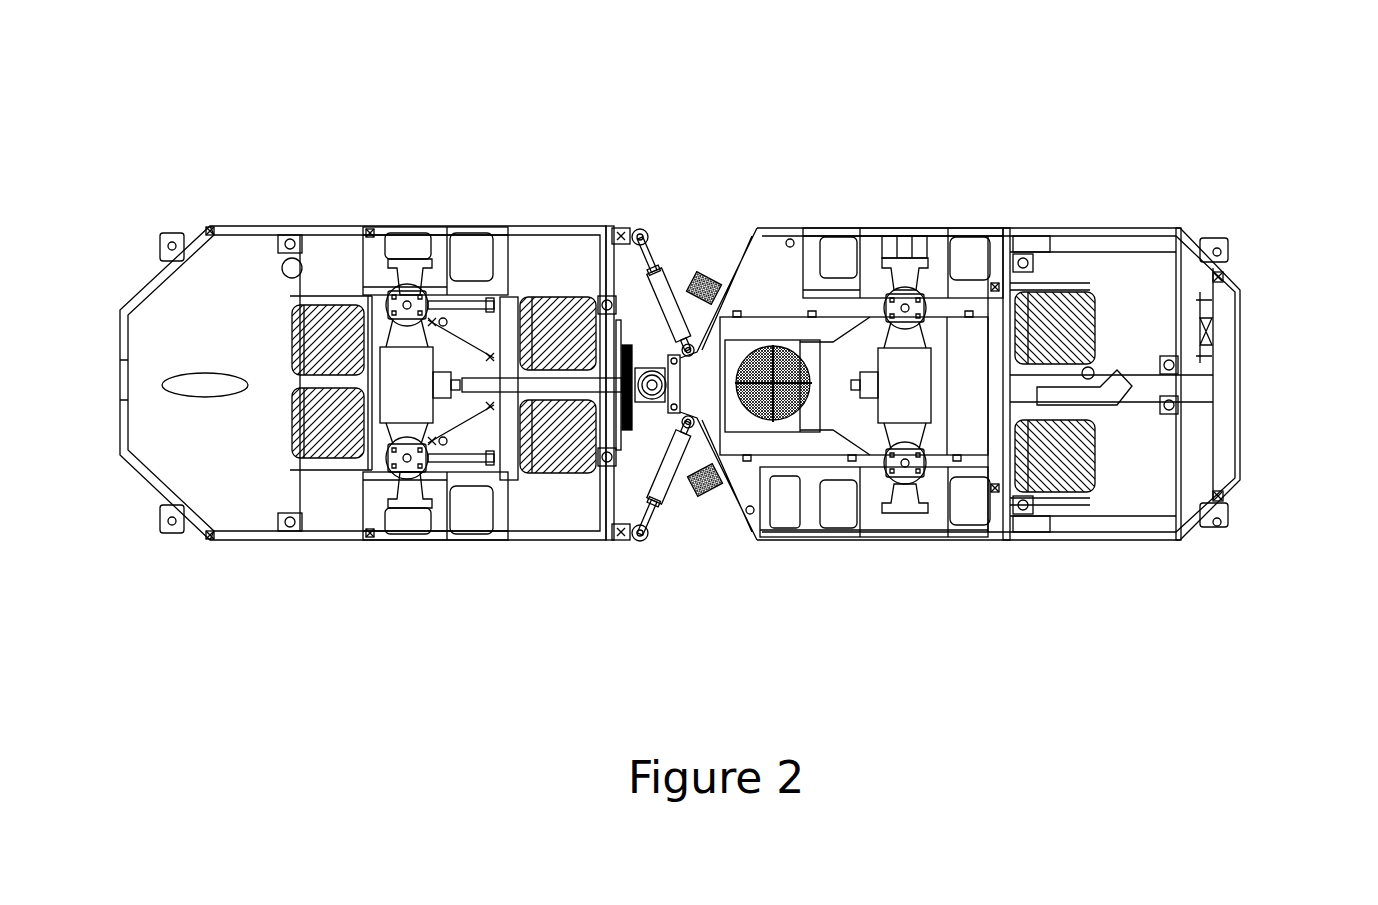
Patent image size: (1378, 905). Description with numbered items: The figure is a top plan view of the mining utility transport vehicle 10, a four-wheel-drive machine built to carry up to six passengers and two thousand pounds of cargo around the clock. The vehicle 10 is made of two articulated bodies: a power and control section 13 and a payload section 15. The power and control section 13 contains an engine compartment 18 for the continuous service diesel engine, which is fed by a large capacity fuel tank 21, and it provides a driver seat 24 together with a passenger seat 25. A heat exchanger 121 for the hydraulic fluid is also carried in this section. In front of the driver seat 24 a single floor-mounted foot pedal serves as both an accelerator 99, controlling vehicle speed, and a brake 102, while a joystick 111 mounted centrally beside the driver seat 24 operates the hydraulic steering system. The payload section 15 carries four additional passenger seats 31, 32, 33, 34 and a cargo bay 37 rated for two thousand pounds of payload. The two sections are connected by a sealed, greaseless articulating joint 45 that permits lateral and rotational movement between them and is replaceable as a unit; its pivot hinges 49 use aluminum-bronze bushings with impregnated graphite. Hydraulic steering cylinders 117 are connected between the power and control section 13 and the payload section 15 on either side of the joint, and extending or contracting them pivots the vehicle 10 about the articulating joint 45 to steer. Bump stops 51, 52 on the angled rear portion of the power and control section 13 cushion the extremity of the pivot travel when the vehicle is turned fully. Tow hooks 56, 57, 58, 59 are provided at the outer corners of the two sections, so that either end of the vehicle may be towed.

The vehicle 10 is at (500, 102).
The power and control section 13 is at (971, 240).
The payload section 15 is at (413, 237).
The engine compartment 18 is at (854, 386).
The fuel tank 21 is at (772, 253).
The driver seat 24 is at (1082, 313).
The passenger seat 25 is at (1093, 470).
The passenger seat 31 is at (557, 455).
The passenger seat 32 is at (555, 320).
The passenger seat 33 is at (300, 433).
The passenger seat 34 is at (300, 335).
The cargo bay 37 is at (180, 375).
The articulating joint 45 is at (715, 548).
The pivot hinges 49 is at (655, 385).
The bump stop 51 is at (710, 505).
The bump stop 52 is at (707, 272).
The tow hook 56 is at (1222, 247).
The tow hook 57 is at (1222, 527).
The tow hook 58 is at (167, 238).
The tow hook 59 is at (165, 521).
The accelerator 99 is at (1202, 352).
The brake 102 is at (1200, 298).
The joystick 111 is at (1095, 373).
The hydraulic steering cylinder 117 is at (647, 230).
The heat exchanger 121 is at (785, 407).